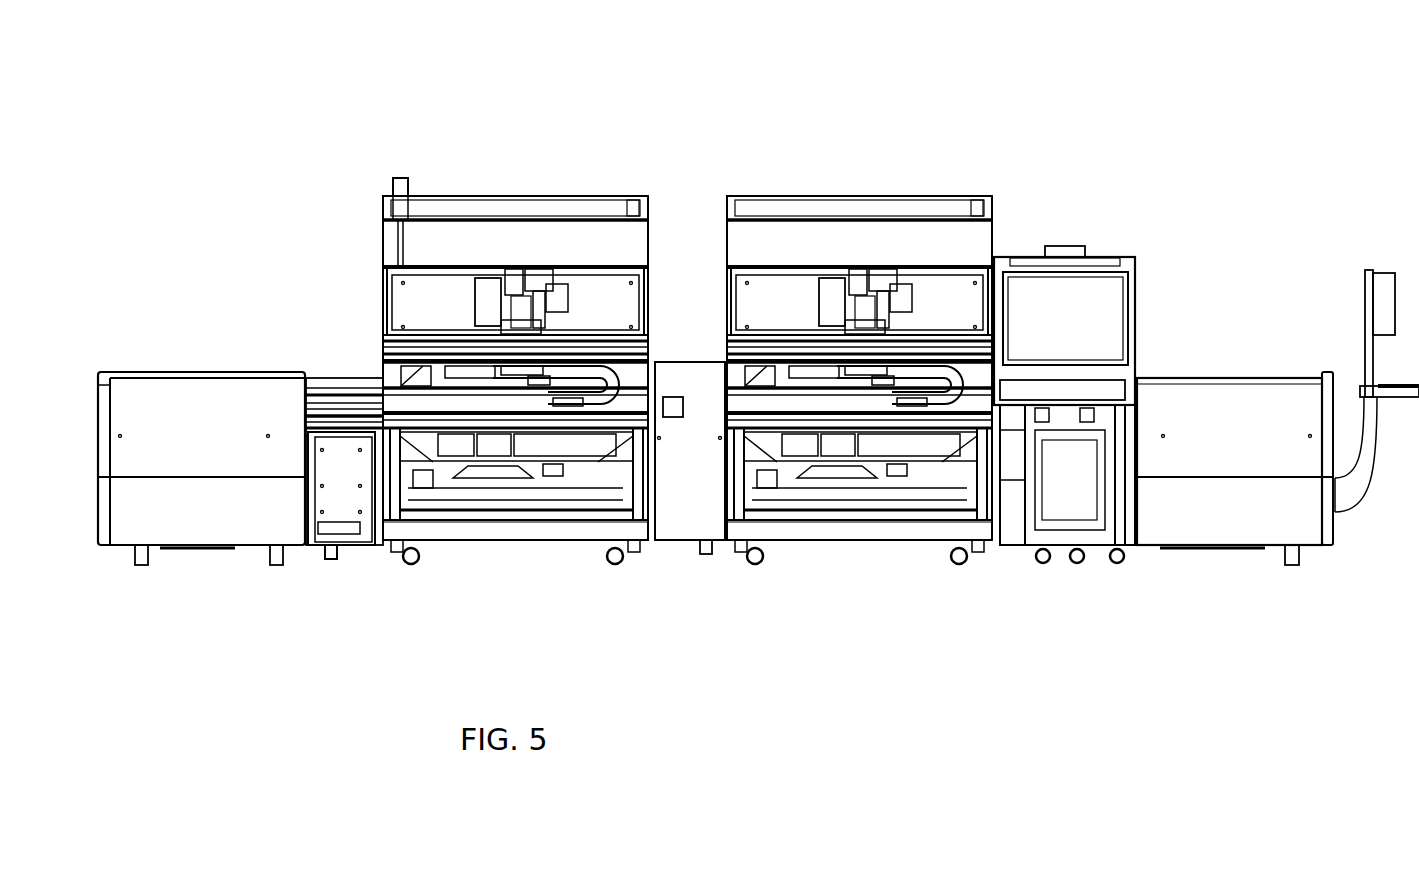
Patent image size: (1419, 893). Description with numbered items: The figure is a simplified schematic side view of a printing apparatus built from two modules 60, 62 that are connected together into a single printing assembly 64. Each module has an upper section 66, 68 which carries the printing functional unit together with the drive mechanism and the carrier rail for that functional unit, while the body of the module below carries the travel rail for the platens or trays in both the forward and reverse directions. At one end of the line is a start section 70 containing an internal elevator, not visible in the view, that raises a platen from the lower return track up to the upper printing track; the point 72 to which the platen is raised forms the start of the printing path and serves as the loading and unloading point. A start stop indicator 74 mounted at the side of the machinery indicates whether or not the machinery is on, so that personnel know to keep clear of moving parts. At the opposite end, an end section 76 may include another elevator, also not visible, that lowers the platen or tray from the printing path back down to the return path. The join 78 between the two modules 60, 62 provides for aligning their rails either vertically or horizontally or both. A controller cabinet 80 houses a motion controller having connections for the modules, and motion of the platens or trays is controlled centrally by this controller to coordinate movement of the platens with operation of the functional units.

The module 60 is at (419, 303).
The module 62 is at (878, 383).
The printing assembly 64 is at (682, 178).
The upper section 66 is at (385, 252).
The upper section 68 is at (965, 265).
The start section 70 is at (1237, 490).
The point 72 is at (1201, 392).
The start stop indicator 74 is at (1383, 268).
The end section 76 is at (197, 500).
The join 78 is at (691, 500).
The controller cabinet 80 is at (1033, 335).